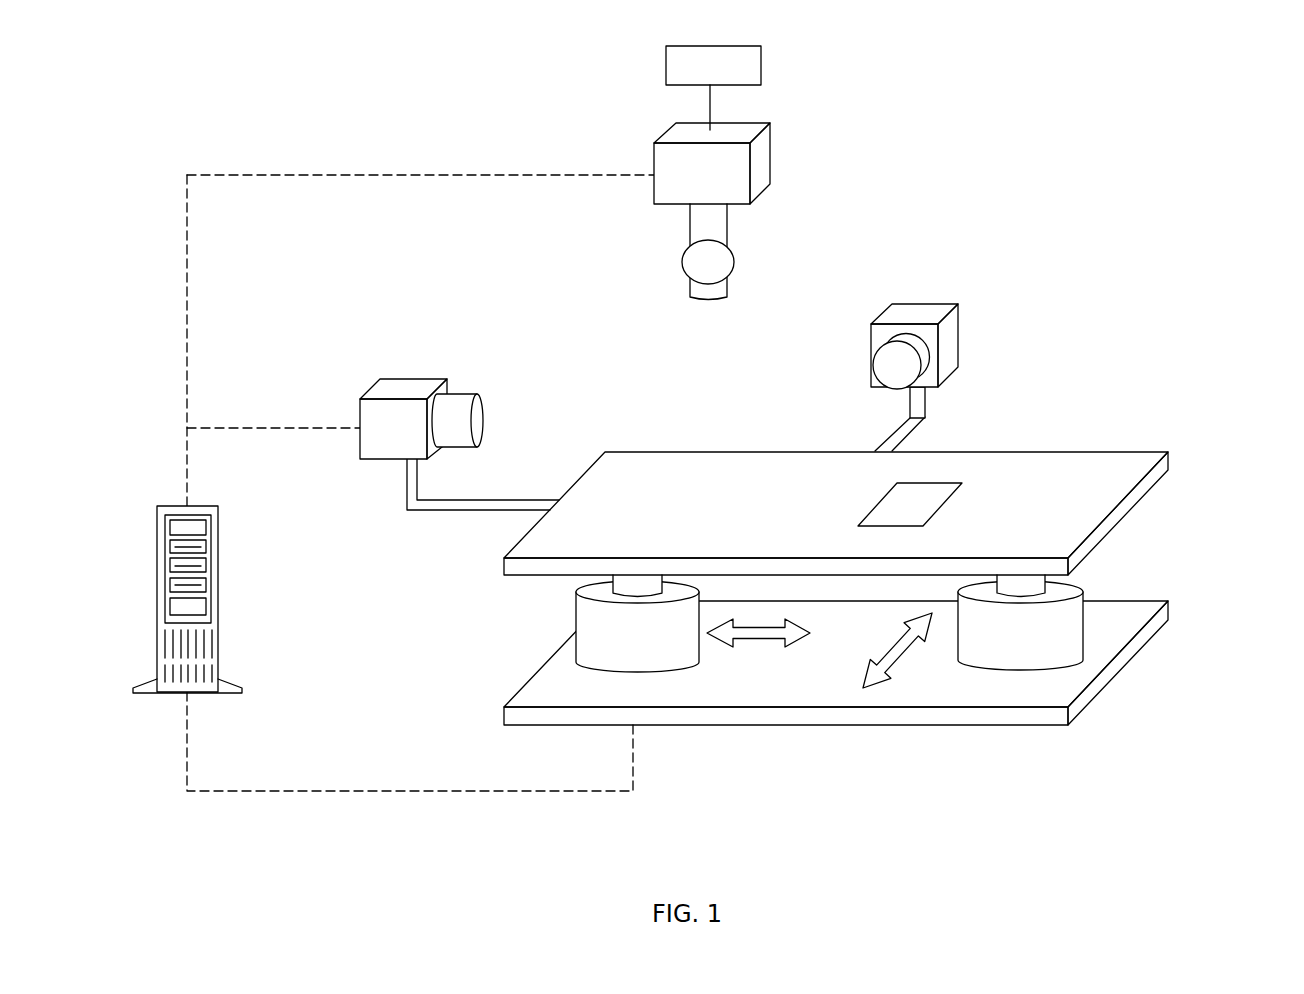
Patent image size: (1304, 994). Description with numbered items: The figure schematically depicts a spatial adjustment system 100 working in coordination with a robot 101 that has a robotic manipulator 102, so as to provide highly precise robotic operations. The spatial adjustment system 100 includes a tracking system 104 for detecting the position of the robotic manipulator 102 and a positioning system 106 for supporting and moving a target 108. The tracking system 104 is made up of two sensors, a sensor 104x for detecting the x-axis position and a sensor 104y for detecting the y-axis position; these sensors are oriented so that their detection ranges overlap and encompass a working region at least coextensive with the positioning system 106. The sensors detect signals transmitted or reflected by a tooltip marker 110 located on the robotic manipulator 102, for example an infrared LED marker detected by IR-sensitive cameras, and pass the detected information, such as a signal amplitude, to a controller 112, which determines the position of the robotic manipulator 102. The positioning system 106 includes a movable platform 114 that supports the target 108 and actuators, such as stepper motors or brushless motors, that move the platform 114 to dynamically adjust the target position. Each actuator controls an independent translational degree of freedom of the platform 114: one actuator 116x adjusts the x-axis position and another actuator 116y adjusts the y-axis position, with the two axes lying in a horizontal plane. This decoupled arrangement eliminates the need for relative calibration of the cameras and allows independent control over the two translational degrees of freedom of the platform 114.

The spatial adjustment system 100 is at (1173, 182).
The robot 101 is at (666, 74).
The robotic manipulator 102 is at (765, 173).
The tracking system 104 is at (955, 292).
The sensor for detecting the x-axis position 104x is at (907, 312).
The sensor for detecting the y-axis position 104y is at (388, 388).
The positioning system 106 is at (1190, 531).
The target 108 is at (918, 492).
The tooltip marker 110 is at (683, 265).
The controller 112 is at (220, 695).
The movable platform 114 is at (1018, 485).
The actuator adjusting the x-axis position 116x is at (588, 630).
The actuator adjusting the y-axis position 116y is at (1018, 661).